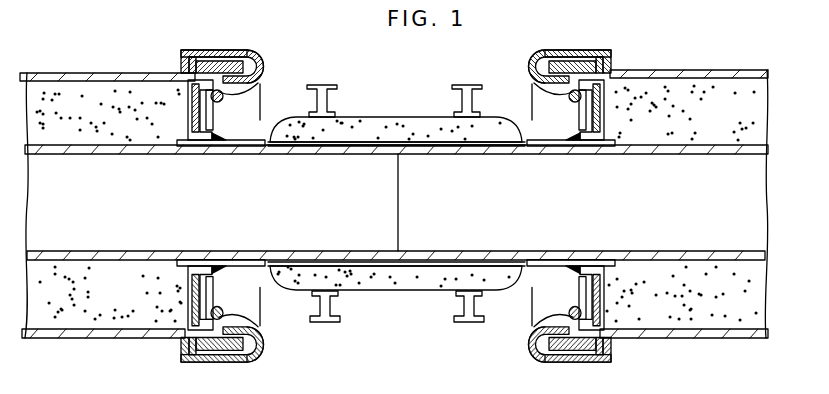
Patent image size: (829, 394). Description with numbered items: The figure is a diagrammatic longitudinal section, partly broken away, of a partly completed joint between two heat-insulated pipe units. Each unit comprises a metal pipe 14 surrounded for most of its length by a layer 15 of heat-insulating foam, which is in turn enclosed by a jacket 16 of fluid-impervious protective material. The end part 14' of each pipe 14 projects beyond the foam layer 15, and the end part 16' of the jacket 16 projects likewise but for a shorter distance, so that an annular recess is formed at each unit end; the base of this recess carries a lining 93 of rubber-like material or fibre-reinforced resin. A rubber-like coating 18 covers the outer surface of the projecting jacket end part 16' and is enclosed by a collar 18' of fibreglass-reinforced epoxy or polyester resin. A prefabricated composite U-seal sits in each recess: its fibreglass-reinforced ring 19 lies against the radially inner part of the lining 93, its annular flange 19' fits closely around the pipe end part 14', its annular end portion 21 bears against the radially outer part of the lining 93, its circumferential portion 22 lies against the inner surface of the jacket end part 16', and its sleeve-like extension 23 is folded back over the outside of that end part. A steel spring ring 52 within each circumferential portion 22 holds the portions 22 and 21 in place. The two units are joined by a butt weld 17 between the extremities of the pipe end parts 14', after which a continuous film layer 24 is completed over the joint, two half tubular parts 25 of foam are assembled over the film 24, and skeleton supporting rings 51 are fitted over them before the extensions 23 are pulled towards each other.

The metal pipe 14 is at (396, 202).
The end part of pipe 14' is at (396, 175).
The layer of heat-insulating foam material 15 is at (57, 95).
The jacket 16 is at (394, 201).
The end part of jacket 16' is at (396, 197).
The butt weld 17 is at (404, 193).
The rubber-like coating 18 is at (414, 206).
The collar 18' is at (401, 199).
The ring 19 is at (425, 205).
The annular flange 19' is at (408, 204).
The annular end portion 21 is at (243, 146).
The circumferential portion 22 is at (259, 91).
The sleeve part 23 is at (225, 50).
The film layer 24 is at (406, 143).
The half tubular part 25 is at (363, 120).
The skeleton supporting ring 51 is at (329, 85).
The steel spring ring 52 is at (221, 93).
The lining 93 is at (188, 122).